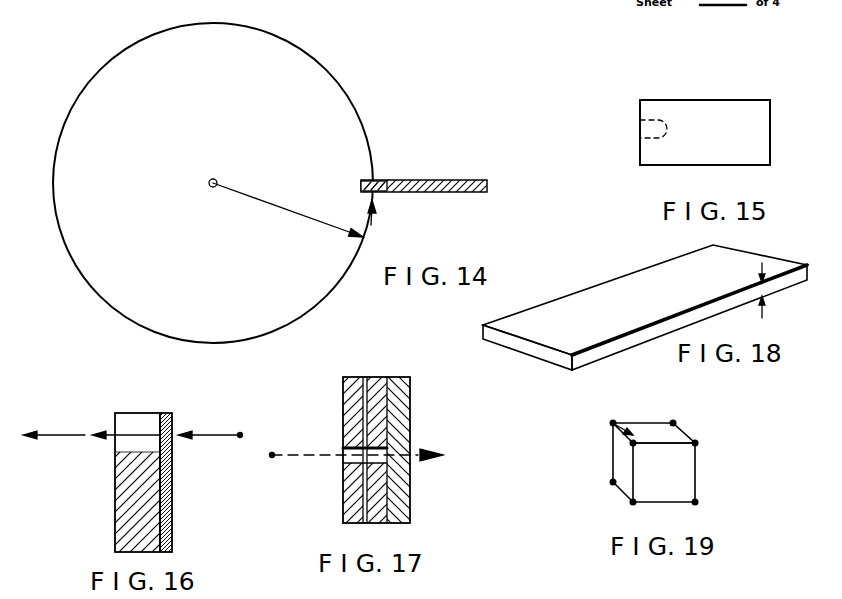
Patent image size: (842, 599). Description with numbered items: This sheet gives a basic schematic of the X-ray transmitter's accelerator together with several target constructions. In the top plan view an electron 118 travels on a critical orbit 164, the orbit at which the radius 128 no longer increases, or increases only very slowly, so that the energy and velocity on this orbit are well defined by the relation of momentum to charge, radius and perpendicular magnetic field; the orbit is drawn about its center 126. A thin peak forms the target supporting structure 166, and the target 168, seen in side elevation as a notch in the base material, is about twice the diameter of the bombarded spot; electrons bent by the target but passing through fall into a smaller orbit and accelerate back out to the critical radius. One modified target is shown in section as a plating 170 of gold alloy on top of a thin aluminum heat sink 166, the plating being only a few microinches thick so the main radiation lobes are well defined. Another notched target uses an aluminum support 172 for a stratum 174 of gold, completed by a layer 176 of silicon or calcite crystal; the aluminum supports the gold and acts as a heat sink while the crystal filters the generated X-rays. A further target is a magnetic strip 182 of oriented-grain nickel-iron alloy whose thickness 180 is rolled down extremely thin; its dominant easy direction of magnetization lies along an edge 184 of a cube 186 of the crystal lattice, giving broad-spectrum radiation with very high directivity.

In FIG. 14, the electron 118 is at (364, 238).
In FIG. 16, the electron 118 is at (240, 435).
In FIG. 17, the electron 118 is at (275, 454).
In FIG. 14, the center of rotation 126 is at (216, 179).
In FIG. 14, the radius 128 is at (287, 209).
In FIG. 14, the critical orbit 164 is at (142, 322).
In FIG. 14, the target supporting structure 166 is at (487, 187).
In FIG. 15, the target supporting structure 166 is at (770, 152).
In FIG. 16, the target supporting structure 166 is at (125, 498).
In FIG. 14, the target 168 is at (361, 182).
In FIG. 15, the target 168 is at (640, 128).
In FIG. 16, the plating 170 is at (172, 423).
In FIG. 17, the aluminum support 172 is at (372, 377).
In FIG. 17, the stratum 174 is at (365, 523).
In FIG. 17, the layer 176 is at (398, 378).
In FIG. 18, the thickness 180 is at (645, 307).
In FIG. 18, the magnetic strip 182 is at (578, 346).
In FIG. 19, the edge 184 is at (660, 436).
In FIG. 19, the cube 186 is at (670, 500).